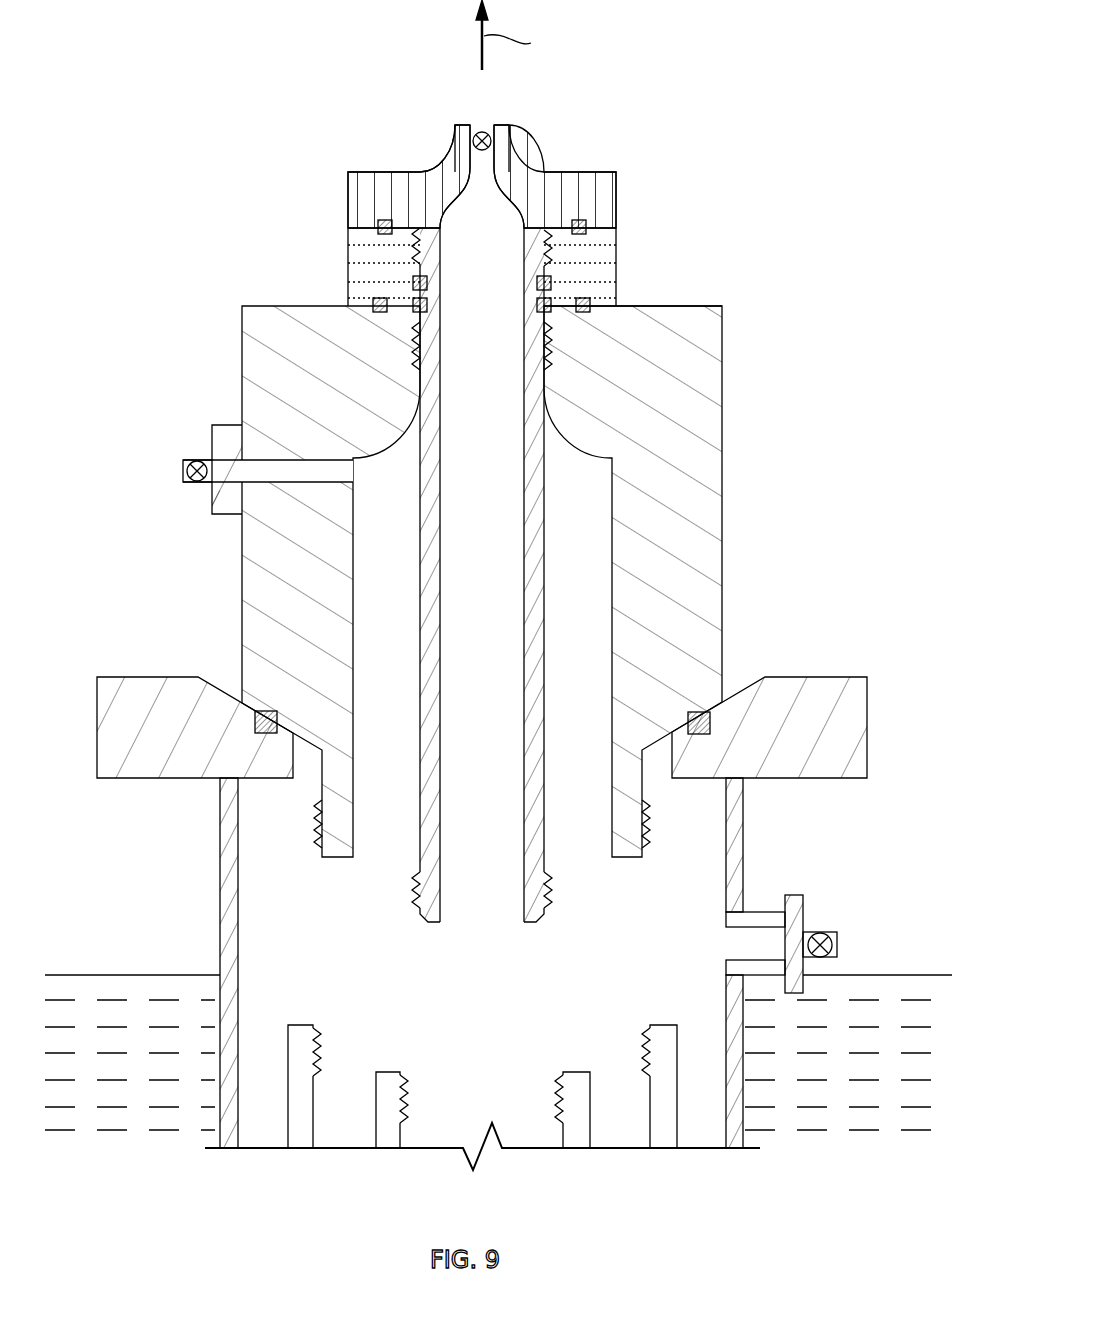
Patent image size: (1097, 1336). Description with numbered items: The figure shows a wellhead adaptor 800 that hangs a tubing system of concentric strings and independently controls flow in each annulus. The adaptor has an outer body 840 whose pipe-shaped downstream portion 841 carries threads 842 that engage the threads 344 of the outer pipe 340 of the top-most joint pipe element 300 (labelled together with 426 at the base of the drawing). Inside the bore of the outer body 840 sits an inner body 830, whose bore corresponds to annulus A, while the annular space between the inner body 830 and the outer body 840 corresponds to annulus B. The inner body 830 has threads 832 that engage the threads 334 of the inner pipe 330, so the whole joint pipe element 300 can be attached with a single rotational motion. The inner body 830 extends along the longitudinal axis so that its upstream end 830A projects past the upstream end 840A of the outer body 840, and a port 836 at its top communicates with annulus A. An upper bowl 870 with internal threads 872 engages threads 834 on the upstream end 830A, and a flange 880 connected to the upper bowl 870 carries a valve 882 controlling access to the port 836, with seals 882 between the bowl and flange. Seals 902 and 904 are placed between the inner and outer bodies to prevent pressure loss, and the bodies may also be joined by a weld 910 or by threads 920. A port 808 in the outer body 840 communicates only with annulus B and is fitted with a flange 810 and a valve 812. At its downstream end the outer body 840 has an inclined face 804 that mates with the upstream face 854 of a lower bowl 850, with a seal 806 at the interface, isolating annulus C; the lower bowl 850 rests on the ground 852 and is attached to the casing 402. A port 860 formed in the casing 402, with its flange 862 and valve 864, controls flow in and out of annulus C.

The wellhead adaptor 800 is at (763, 40).
The flange 880 is at (553, 183).
The seal 882 is at (481, 131).
The port 836 is at (455, 237).
The threads 834 is at (536, 241).
The upstream end 830A is at (527, 258).
The upper bowl 870 is at (600, 240).
The internal threads 872 is at (556, 258).
The upstream end 840A is at (697, 298).
The seal 902 is at (414, 284).
The seal 904 is at (376, 313).
The weld 910 is at (424, 314).
The flange 810 is at (232, 425).
The valve 812 is at (183, 471).
The port 808 is at (312, 465).
The threads 920 is at (542, 358).
The outer body 840 is at (700, 510).
The seal 806 is at (700, 711).
The lower bowl 850 is at (833, 703).
The upstream face 854 is at (250, 710).
The inclined face 804 is at (262, 710).
The threads 842 is at (314, 826).
The downstream portion 841 is at (337, 858).
The inner body 830 is at (403, 851).
The threads 832 is at (413, 906).
The casing 402 is at (755, 865).
The flange 862 is at (800, 905).
The port 860 is at (750, 940).
The valve 864 is at (837, 945).
The ground 852 is at (920, 1000).
The threads 344 is at (650, 1035).
The outer pipe 340 is at (680, 1030).
The threads 334 is at (560, 1080).
The inner pipe 330 is at (592, 1080).
The joint pipe element 300 is at (497, 1158).
The base 426 is at (692, 1138).